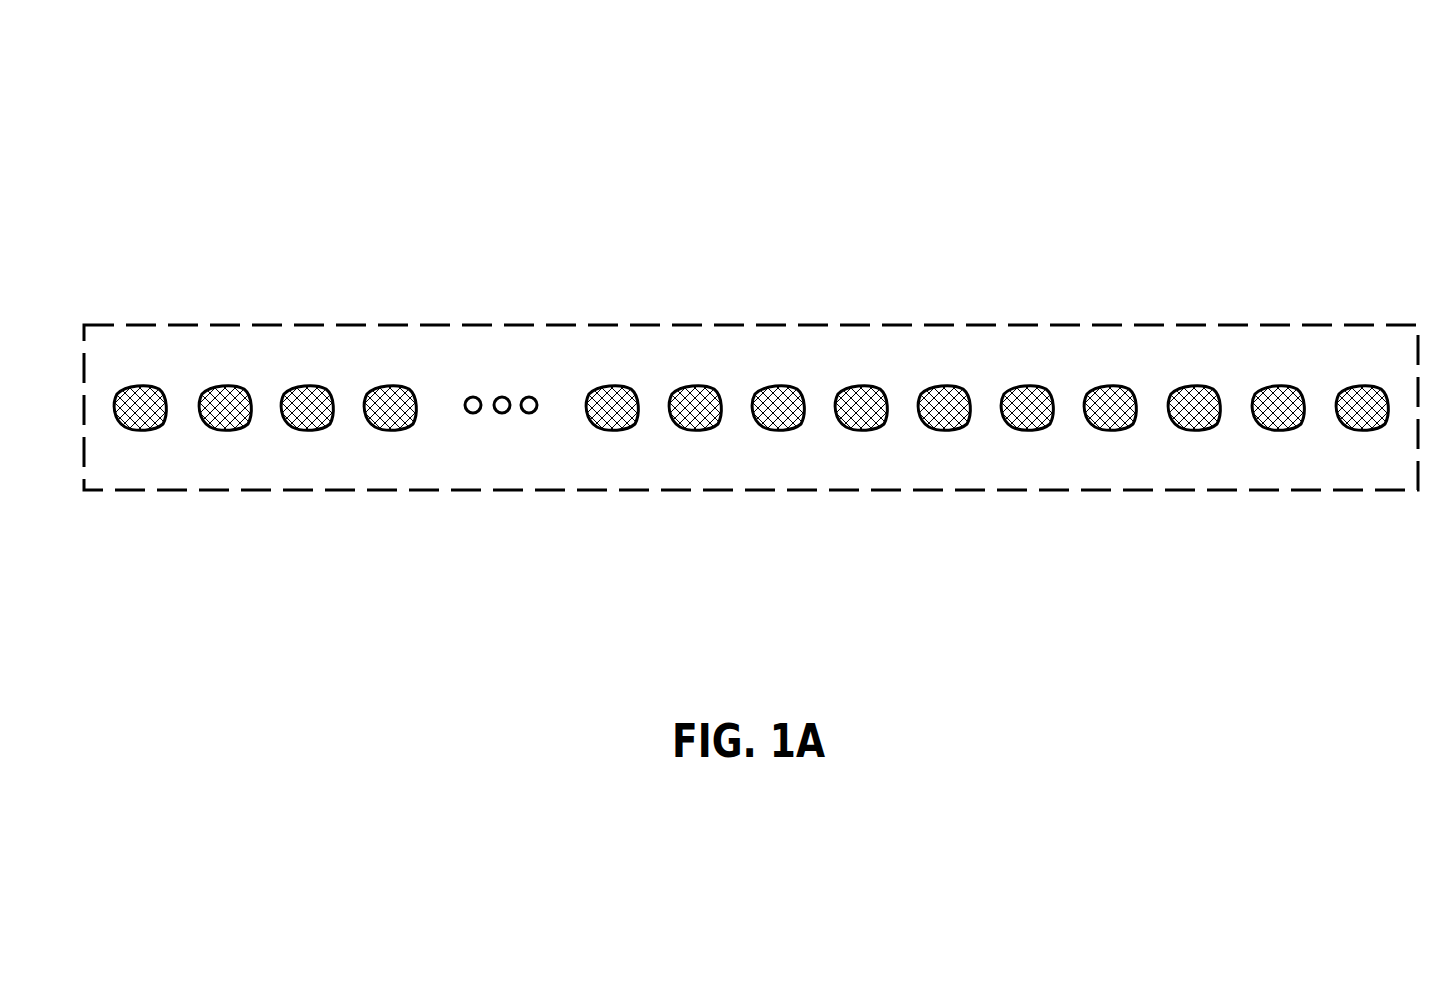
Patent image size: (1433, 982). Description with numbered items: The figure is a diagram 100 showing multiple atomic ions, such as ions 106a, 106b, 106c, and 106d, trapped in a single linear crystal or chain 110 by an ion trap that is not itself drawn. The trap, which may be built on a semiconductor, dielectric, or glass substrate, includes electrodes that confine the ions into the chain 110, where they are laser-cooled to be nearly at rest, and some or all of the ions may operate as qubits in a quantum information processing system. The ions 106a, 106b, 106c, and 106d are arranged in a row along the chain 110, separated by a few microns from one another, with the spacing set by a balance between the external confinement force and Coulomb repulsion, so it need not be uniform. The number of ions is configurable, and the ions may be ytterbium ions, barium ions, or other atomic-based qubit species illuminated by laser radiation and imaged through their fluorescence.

The diagram 100 is at (252, 87).
The linear crystal or chain 110 is at (810, 325).
The ion 106a is at (168, 392).
The ion 106b is at (247, 391).
The ion 106c is at (1298, 390).
The ion 106d is at (1380, 390).